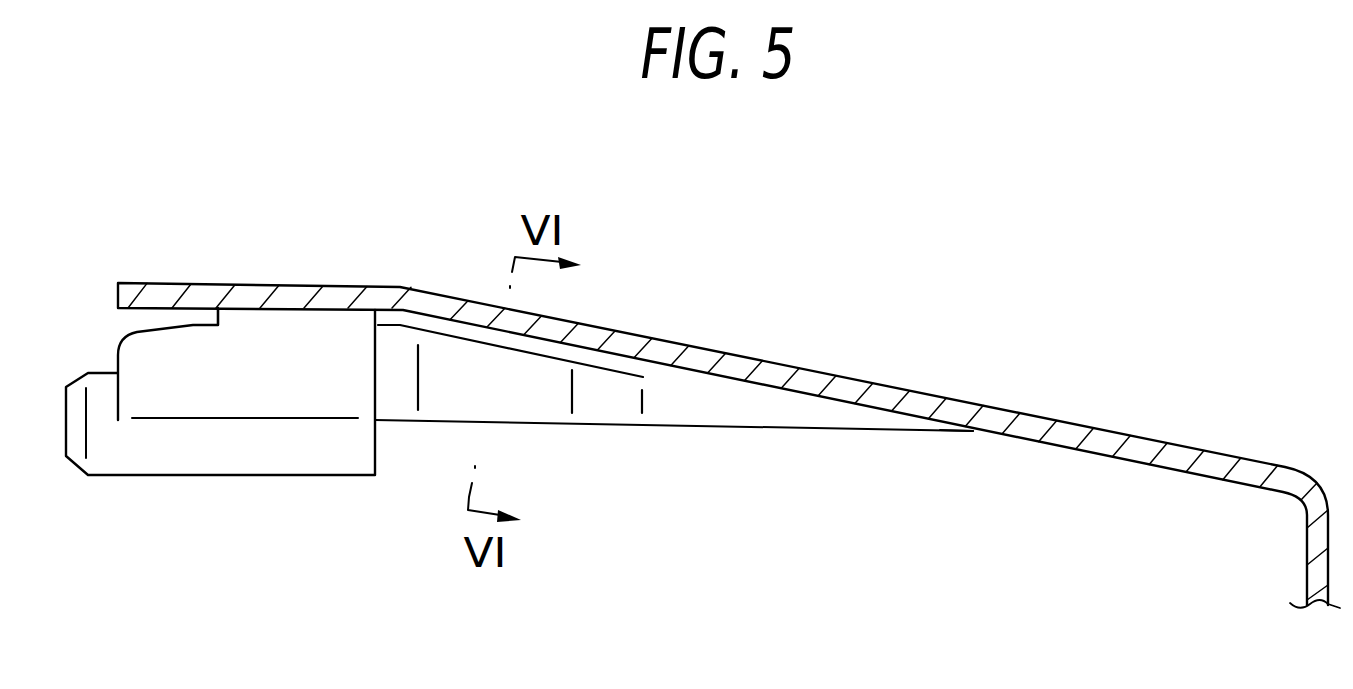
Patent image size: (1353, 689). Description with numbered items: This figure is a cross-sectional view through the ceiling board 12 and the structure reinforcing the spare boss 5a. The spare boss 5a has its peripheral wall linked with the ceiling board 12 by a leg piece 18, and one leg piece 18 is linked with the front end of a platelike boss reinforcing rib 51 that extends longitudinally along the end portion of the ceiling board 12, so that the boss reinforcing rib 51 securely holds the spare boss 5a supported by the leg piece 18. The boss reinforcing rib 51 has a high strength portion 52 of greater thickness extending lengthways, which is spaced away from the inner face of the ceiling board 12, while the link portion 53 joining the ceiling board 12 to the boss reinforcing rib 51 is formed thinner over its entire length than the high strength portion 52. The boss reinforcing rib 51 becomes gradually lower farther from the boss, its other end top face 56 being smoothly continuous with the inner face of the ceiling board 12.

The ceiling board 12 is at (1108, 427).
The leg piece 18 is at (193, 333).
The spare boss 5a is at (238, 478).
The boss reinforcing rib 51 is at (725, 417).
The high strength portion 52 is at (460, 350).
The link portion 53 is at (673, 380).
The other end top face 56 is at (963, 433).